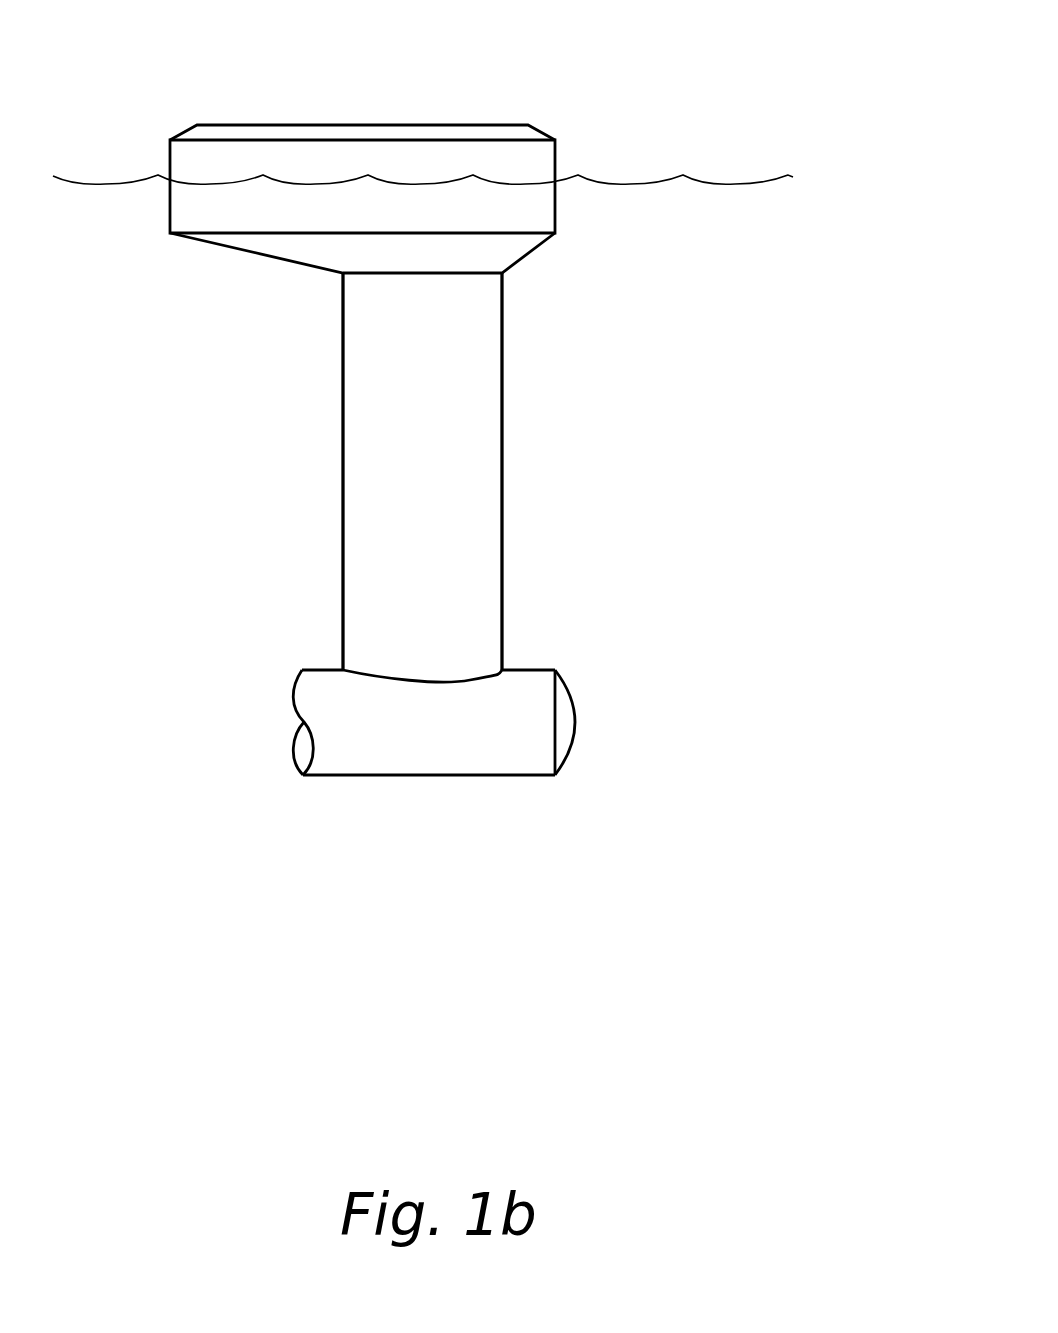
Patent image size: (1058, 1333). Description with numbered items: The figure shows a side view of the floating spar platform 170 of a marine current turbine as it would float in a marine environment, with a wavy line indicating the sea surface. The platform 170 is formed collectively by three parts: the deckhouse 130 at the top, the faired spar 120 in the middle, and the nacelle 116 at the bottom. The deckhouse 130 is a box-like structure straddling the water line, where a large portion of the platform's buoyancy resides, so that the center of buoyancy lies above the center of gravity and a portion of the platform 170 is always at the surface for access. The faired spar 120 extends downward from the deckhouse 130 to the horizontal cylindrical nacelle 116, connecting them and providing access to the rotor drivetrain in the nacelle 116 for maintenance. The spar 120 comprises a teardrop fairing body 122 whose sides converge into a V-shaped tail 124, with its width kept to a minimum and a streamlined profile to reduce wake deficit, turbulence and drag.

The floating spar platform 170 is at (687, 43).
The deckhouse 130 is at (558, 161).
The faired spar 120 is at (440, 464).
The teardrop fairing body 122 is at (504, 364).
The V-shaped tail 124 is at (341, 401).
The nacelle 116 is at (533, 668).